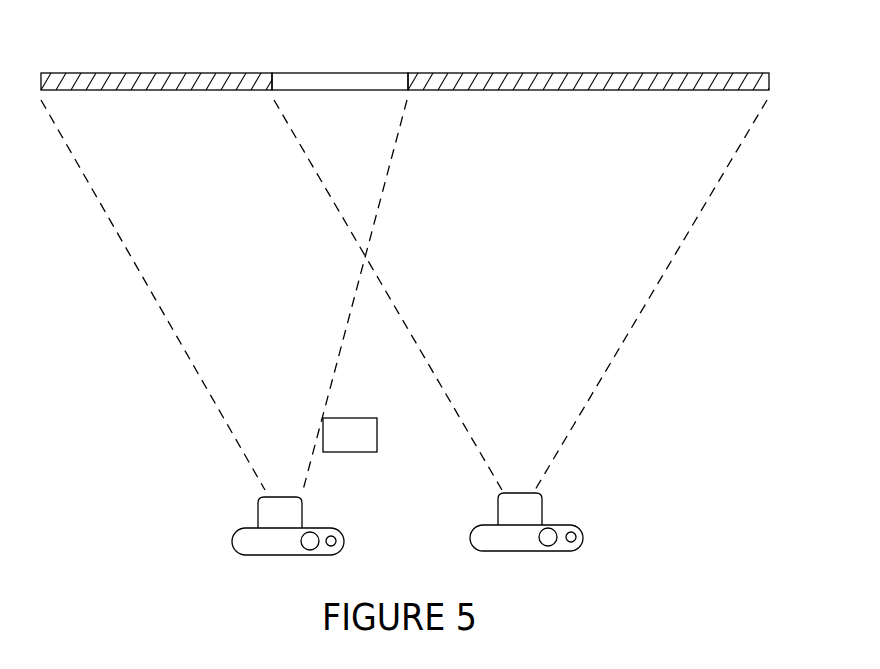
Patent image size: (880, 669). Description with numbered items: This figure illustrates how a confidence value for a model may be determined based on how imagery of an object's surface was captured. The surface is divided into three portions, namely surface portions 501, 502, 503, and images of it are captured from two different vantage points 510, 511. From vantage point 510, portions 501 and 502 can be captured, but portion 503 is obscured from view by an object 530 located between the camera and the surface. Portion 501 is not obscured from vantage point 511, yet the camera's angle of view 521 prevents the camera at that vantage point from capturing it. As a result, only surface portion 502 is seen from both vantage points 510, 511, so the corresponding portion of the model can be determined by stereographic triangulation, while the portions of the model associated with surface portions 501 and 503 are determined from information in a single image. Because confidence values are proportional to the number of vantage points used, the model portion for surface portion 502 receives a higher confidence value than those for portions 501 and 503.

The surface portion 501 is at (94, 80).
The surface portion 502 is at (290, 80).
The surface portion 503 is at (488, 80).
The vantage point 510 is at (232, 543).
The vantage point 511 is at (583, 537).
The angle of view 521 is at (668, 262).
The object 530 is at (323, 432).